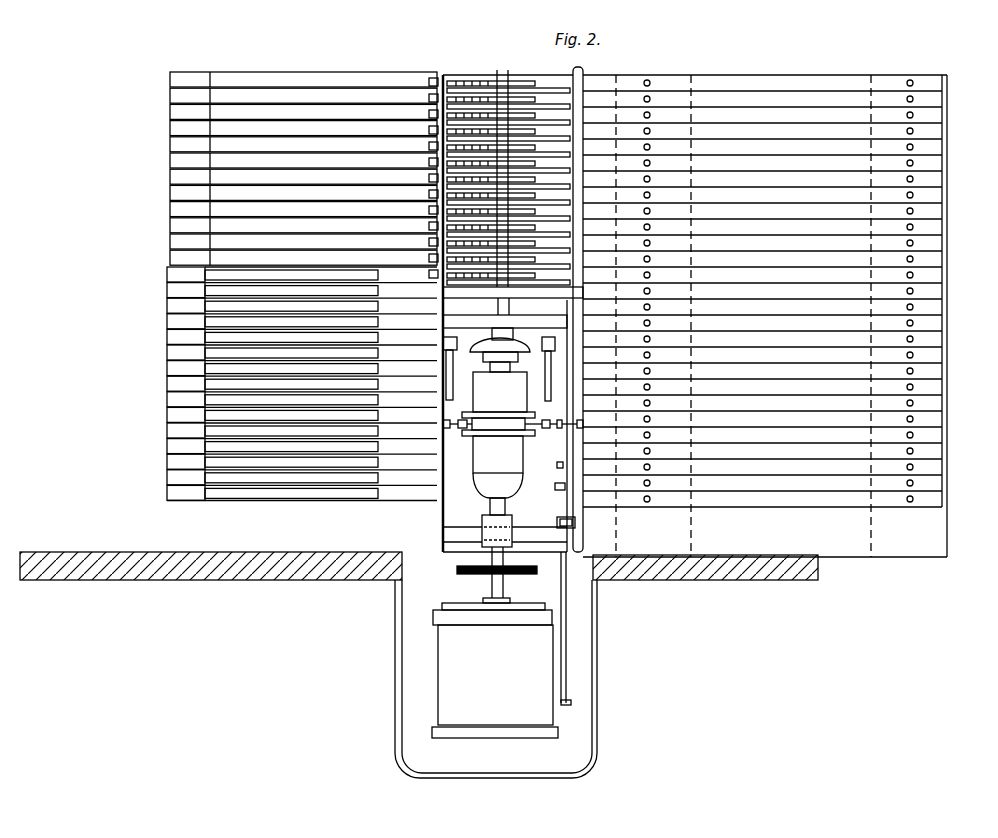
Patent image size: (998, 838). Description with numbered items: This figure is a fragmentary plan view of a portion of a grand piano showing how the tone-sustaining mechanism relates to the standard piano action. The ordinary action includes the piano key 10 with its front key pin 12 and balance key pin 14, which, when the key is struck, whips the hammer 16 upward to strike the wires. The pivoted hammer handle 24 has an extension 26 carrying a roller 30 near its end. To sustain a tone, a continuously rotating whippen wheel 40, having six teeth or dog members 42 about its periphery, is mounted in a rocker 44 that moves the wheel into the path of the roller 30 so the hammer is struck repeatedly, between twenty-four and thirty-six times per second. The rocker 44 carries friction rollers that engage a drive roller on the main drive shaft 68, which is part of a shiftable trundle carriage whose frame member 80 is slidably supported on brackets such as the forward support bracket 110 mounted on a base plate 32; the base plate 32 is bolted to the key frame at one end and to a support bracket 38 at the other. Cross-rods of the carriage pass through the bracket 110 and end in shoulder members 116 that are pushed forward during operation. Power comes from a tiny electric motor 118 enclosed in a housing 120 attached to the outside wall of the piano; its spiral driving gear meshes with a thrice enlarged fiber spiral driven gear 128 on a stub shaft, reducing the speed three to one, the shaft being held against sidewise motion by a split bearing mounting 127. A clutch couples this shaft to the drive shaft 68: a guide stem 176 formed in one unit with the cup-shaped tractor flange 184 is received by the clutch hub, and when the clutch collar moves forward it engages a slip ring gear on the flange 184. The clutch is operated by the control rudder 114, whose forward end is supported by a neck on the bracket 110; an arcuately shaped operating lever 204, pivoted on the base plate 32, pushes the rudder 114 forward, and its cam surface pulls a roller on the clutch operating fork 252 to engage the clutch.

The piano key 10 is at (785, 316).
The front key pin 12 is at (913, 149).
The balance key pin 14 is at (650, 339).
The hammer 16 is at (272, 276).
The hammer handle 24 is at (378, 413).
The extension 26 is at (350, 143).
The roller 30 is at (436, 78).
The base plate 32 is at (544, 494).
The support bracket 38 is at (443, 531).
The whippen wheel 40 is at (462, 112).
The teeth or dog members 42 is at (455, 270).
The rocker 44 is at (556, 110).
The drive shaft 68 is at (501, 74).
The frame member 80 is at (580, 72).
The forward support bracket 110 is at (455, 297).
The control rudder 114 is at (567, 653).
The shoulder members 116 is at (546, 391).
The electric motor 118 is at (438, 668).
The housing 120 is at (395, 752).
The split bearing mounting 127 is at (482, 521).
The spiral driven gear 128 is at (457, 571).
The guide stem 176 is at (473, 465).
The tractor flange 184 is at (513, 347).
The operating lever 204 is at (557, 521).
The clutch operating fork 252 is at (541, 431).